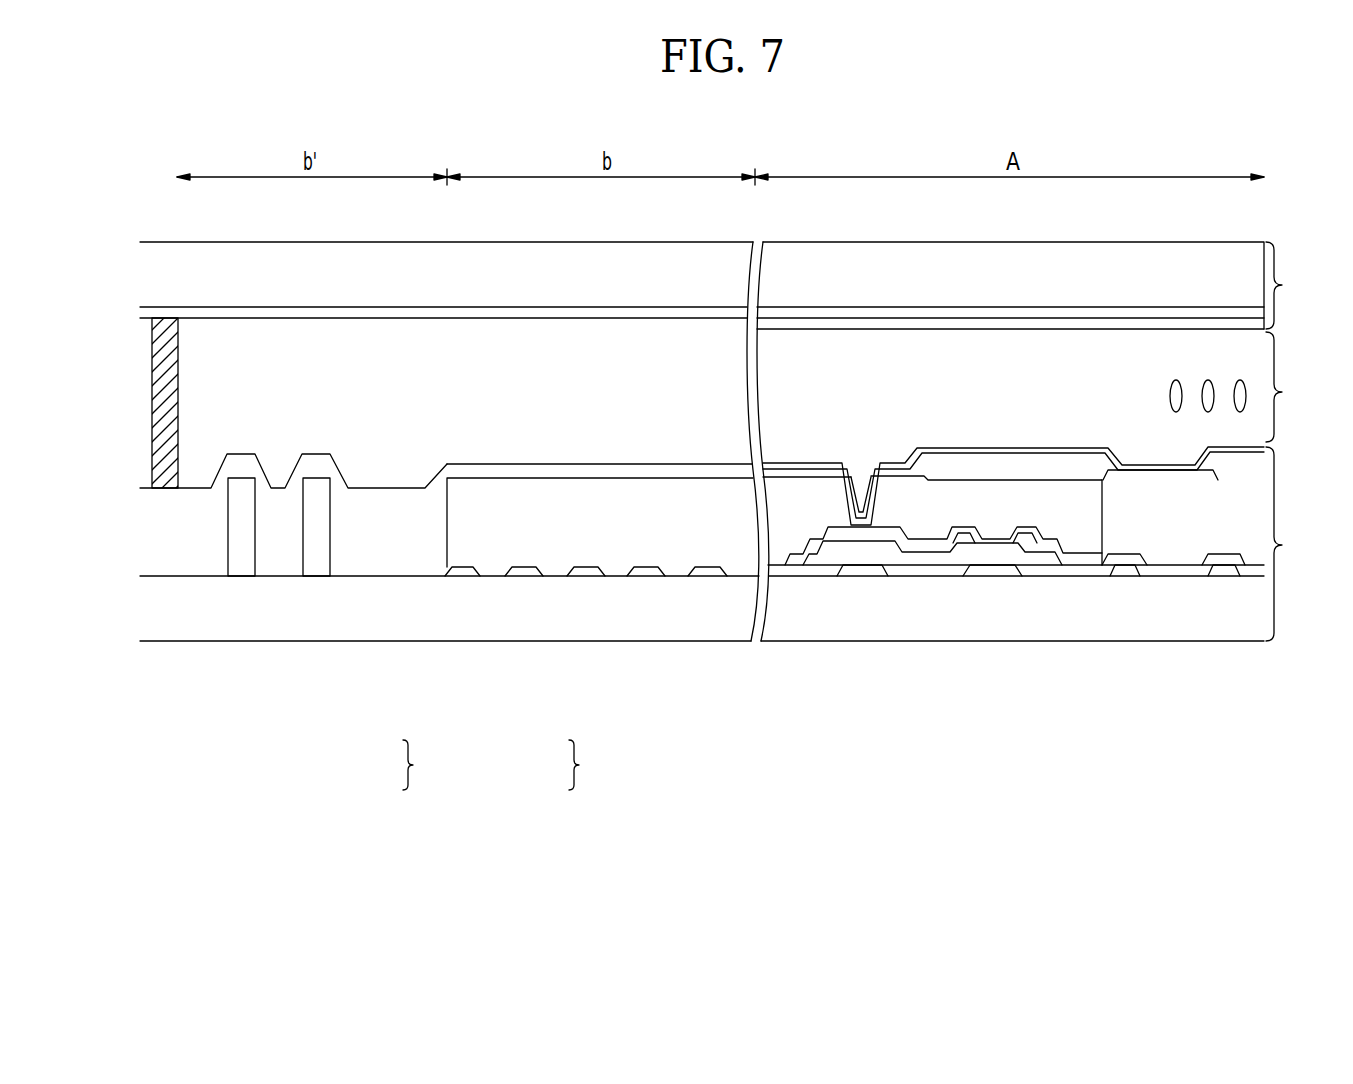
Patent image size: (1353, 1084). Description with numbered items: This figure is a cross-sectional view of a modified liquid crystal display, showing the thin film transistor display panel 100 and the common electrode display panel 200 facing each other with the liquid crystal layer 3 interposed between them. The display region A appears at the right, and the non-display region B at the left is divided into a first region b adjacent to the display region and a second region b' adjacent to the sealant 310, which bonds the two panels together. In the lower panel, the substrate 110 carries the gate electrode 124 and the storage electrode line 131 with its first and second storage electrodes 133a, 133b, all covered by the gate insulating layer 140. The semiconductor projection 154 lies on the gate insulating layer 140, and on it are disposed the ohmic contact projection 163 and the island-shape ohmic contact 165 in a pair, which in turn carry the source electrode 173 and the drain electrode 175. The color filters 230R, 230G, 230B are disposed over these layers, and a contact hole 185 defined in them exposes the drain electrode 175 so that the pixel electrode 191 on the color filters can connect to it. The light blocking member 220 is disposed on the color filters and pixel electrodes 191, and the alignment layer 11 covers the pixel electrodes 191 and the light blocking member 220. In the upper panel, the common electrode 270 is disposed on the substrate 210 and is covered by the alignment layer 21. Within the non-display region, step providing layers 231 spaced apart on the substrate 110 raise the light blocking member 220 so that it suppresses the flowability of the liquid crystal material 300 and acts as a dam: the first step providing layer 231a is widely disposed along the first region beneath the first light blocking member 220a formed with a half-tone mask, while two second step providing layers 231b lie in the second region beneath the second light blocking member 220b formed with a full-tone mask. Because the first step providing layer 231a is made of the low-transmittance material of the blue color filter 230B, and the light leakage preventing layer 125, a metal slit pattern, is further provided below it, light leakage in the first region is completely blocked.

The liquid crystal layer 3 is at (1278, 387).
The alignment layer 11 is at (1175, 473).
The alignment layer 21 is at (920, 323).
The thin film transistor display panel 100 is at (1288, 544).
The substrate 110 is at (1146, 626).
The gate electrode 124 is at (993, 574).
The light leakage preventing layer 125 is at (585, 571).
The storage electrode line 131 is at (860, 574).
The first storage electrode 133a is at (1124, 573).
The second storage electrode 133b is at (1221, 573).
The gate insulating layer 140 is at (784, 571).
The projection 154 is at (848, 563).
The projection 163 is at (1055, 558).
The island-shape ohmic contact 165 is at (912, 554).
The source electrode 173 is at (1041, 557).
The drain electrode 175 is at (937, 548).
The contact hole 185 is at (842, 498).
The pixel electrode 191 is at (1138, 473).
The common electrode display panel 200 is at (725, 285).
The substrate 210 is at (985, 258).
The light blocking member 220 is at (1062, 460).
The first light blocking member 220a is at (602, 472).
The second light blocking member 220b is at (314, 465).
The red color filter 230R is at (792, 495).
The green color filter 230G is at (971, 495).
The blue color filter 230B is at (1177, 543).
The step providing layer 231 is at (402, 764).
The first step providing layer 231a is at (680, 544).
The second step providing layer 231b is at (317, 556).
The common electrode 270 is at (1081, 312).
The liquid crystal material 300 is at (1170, 392).
The sealant 310 is at (170, 386).